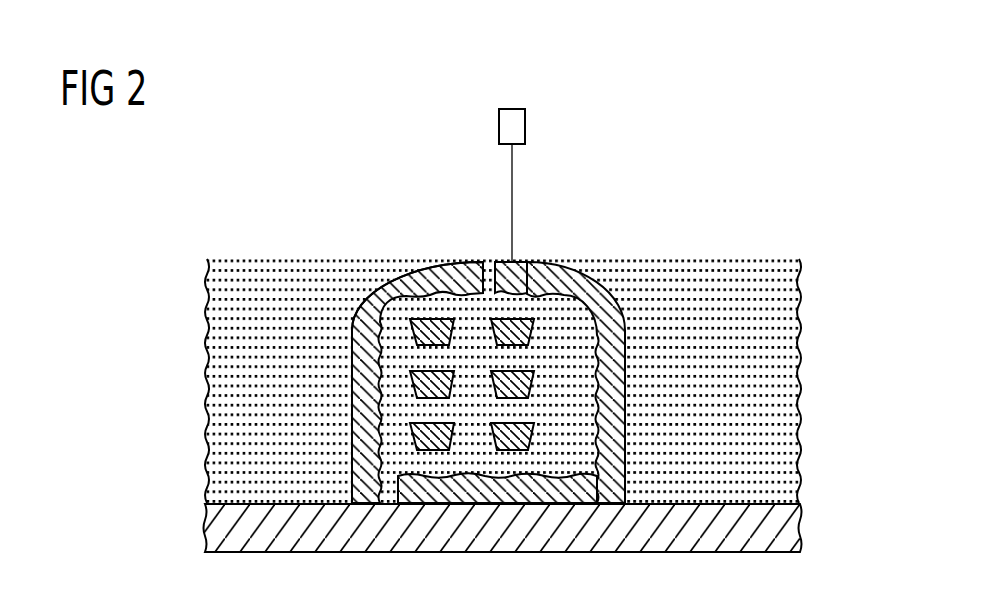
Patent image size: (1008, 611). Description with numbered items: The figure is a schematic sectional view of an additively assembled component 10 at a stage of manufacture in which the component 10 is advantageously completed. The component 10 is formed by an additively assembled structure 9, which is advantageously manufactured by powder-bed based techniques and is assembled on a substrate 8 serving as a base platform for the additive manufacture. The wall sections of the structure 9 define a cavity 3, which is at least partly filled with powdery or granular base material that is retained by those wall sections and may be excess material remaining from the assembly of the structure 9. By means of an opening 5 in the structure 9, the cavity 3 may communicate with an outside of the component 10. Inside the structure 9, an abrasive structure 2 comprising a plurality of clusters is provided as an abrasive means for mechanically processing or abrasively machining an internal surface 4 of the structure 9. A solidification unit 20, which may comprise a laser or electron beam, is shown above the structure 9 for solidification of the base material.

The abrasive structure 2 is at (522, 318).
The cavity 3 is at (567, 317).
The internal surface 4 is at (582, 401).
The opening 5 is at (492, 259).
The substrate 8 is at (802, 522).
The structure 9 is at (415, 277).
The component 10 is at (415, 277).
The solidification unit 20 is at (527, 124).